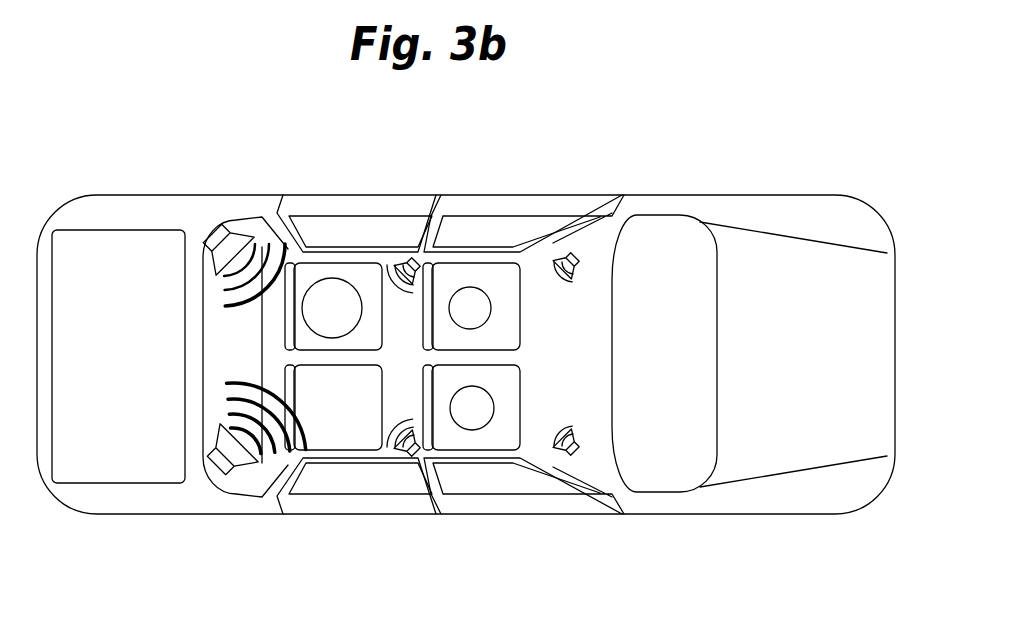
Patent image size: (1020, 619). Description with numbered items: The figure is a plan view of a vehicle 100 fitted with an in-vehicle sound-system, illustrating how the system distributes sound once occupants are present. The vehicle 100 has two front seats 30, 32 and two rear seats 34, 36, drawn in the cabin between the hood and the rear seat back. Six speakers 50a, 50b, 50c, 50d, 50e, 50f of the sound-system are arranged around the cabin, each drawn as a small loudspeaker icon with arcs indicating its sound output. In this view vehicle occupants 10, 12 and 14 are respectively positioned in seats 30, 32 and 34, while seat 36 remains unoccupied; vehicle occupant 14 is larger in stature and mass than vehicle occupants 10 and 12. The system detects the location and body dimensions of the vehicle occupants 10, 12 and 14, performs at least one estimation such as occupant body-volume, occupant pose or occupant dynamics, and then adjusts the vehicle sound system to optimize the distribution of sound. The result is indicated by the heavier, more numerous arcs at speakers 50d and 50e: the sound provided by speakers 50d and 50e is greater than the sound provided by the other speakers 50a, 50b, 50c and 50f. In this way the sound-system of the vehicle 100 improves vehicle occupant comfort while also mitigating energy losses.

The vehicle occupant 10 is at (470, 308).
The vehicle occupant 12 is at (472, 408).
The vehicle occupant 14 is at (332, 308).
The front seat 30 is at (470, 263).
The front seat 32 is at (472, 450).
The rear seat 34 is at (333, 263).
The rear seat 36 is at (335, 450).
The speaker 50a is at (218, 228).
The speaker 50b is at (415, 257).
The speaker 50c is at (577, 250).
The speaker 50d is at (213, 478).
The speaker 50e is at (415, 452).
The speaker 50f is at (578, 455).
The vehicle 100 is at (466, 354).